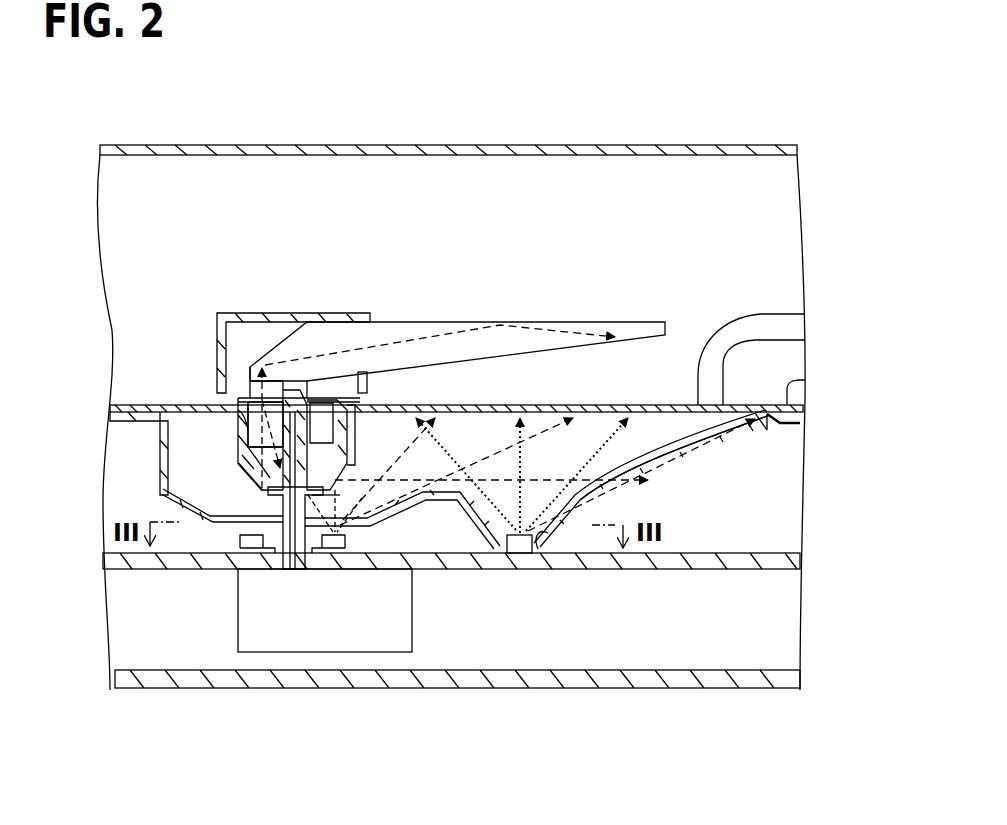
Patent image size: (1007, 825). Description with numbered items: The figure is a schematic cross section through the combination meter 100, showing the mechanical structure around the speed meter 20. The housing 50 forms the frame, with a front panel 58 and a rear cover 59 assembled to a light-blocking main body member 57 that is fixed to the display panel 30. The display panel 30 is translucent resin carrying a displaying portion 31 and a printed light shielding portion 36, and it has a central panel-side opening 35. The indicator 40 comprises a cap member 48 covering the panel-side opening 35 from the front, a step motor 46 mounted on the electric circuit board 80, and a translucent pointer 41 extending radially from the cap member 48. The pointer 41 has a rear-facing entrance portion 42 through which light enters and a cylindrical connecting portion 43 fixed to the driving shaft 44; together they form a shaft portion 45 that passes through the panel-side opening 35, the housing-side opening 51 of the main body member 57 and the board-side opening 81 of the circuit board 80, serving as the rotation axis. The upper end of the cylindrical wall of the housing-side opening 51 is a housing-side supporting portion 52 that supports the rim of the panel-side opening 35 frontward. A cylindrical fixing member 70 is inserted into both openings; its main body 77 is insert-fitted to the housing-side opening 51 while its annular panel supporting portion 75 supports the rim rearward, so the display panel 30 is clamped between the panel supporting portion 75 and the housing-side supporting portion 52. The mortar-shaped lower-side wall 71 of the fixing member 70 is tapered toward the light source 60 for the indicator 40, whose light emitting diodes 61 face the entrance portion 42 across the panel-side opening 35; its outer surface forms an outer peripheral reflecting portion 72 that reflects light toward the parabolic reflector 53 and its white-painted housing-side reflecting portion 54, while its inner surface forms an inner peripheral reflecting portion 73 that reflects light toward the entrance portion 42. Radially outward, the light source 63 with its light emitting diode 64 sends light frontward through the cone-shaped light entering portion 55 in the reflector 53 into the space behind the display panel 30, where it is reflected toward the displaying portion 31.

The combination meter 100 is at (812, 42).
The speed meter 20 is at (148, 215).
The cap member 48 is at (245, 313).
The housing 50 is at (798, 134).
The front panel 58 is at (797, 150).
The indicator 40 is at (665, 328).
The pointer 41 is at (652, 291).
The entrance portion 42 is at (252, 382).
The panel supporting portion 75 is at (245, 398).
The housing-side supporting portion 52 is at (237, 410).
The panel-side opening 35 is at (238, 435).
The housing-side opening 51 is at (238, 450).
The main body 77 is at (242, 470).
The fixing member 70 is at (250, 486).
The light shielding portion 36 is at (805, 314).
The displaying portion 31 is at (805, 340).
The display panel 30 is at (805, 380).
The main body member 57 is at (805, 414).
The reflector 53 is at (738, 428).
The housing-side reflecting portion 54 is at (735, 445).
The electric circuit board 80 is at (803, 555).
The rear cover 59 is at (803, 678).
The light source for the indicator 60 is at (212, 546).
The inner peripheral reflecting portion 73 is at (255, 485).
The driving shaft 44 is at (283, 505).
The connecting portion 43 is at (292, 505).
The shaft portion 45 is at (232, 758).
The lower-side wall 71 is at (300, 500).
The board-side opening 81 is at (258, 549).
The light emitting diode 61 is at (335, 550).
The outer peripheral reflecting portion 72 is at (342, 518).
The step motor 46 is at (408, 628).
The light source for the display panel 63 is at (520, 555).
The light emitting diode 64 is at (524, 645).
The light entering portion 55 is at (548, 556).